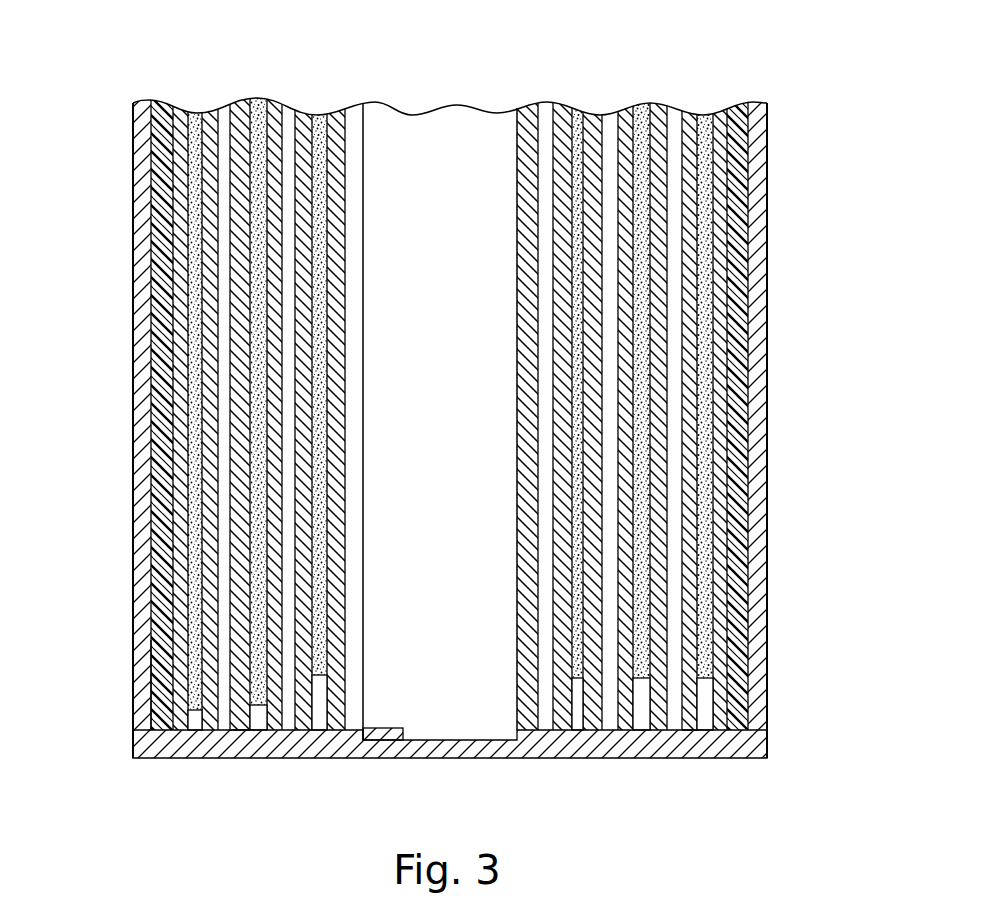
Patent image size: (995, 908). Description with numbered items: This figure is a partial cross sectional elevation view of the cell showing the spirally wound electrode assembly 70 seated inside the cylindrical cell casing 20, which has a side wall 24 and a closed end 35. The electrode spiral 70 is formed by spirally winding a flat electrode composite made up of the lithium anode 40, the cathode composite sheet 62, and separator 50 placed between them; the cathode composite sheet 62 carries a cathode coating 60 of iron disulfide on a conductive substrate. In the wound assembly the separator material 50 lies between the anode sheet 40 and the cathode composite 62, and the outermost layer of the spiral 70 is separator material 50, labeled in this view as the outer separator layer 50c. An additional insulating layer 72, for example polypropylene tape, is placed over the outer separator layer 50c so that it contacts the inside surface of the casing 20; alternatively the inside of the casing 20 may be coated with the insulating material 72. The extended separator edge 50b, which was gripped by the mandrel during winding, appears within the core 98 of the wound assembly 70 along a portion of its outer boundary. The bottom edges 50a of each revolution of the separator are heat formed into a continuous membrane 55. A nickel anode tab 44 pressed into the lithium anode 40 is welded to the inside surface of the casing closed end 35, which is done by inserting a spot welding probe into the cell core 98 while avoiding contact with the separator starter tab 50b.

The cell casing 20 is at (148, 214).
The casing side wall 24 is at (132, 500).
The closed end of casing 35 is at (625, 760).
The lithium anode 40 is at (184, 104).
The anode tab 44 is at (383, 740).
The separator 50 is at (177, 103).
The bottom edges of separator 50a is at (240, 731).
The extended separator edge 50b is at (527, 105).
The outer plate layer 50c is at (732, 478).
The continuous membrane 55 is at (317, 731).
The cathode coating 60 is at (223, 104).
The cathode composite sheet 62 is at (210, 608).
The spirally wound electrode assembly 70 is at (163, 668).
The insulating layer 72 is at (162, 302).
The cell core 98 is at (455, 393).